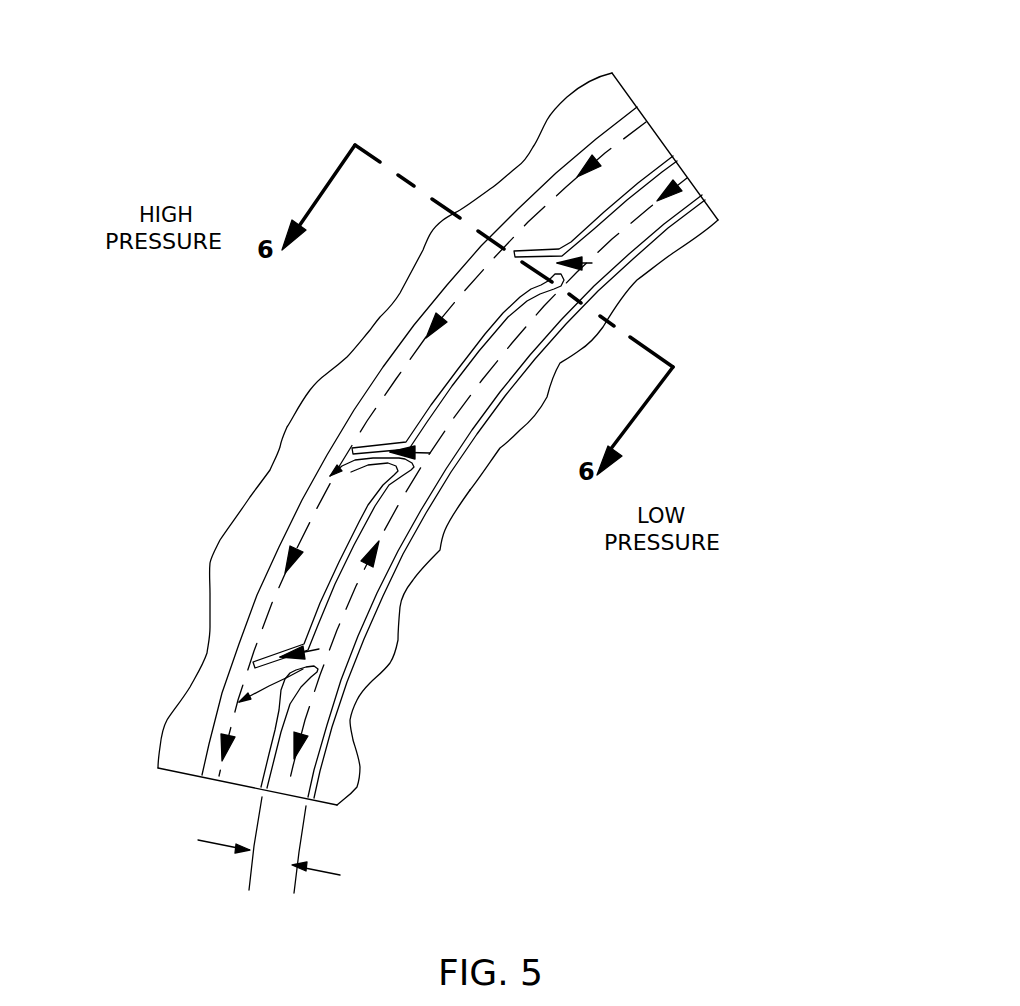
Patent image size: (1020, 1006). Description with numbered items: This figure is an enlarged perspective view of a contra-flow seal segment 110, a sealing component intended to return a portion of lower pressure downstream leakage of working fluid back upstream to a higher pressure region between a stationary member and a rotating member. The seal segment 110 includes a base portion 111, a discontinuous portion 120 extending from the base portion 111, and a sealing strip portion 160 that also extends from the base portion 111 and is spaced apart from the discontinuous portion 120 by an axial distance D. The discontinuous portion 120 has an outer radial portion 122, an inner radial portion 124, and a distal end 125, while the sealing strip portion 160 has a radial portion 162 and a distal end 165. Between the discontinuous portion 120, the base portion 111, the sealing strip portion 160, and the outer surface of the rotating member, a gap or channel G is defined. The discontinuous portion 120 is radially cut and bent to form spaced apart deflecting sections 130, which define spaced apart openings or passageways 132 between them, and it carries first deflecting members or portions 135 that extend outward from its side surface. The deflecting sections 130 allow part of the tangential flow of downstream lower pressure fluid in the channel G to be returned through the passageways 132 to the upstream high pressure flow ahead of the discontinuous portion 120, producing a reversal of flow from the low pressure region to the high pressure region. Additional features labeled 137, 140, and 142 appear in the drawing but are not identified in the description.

The contra-flow seal segment 110 is at (642, 77).
The base portion 111 is at (577, 122).
The discontinuous portion 120 is at (678, 120).
The outer radial portion 122 is at (286, 520).
The inner radial portion 124 is at (296, 609).
The distal end 125 is at (458, 372).
The deflecting sections 130 is at (395, 662).
The passageways 132 is at (580, 283).
The first deflecting members 135 is at (300, 683).
The shingle tip 137 is at (283, 655).
The shingle 140 is at (423, 392).
The shingle trailing tip 142 is at (353, 433).
The sealing strip portion 160 is at (716, 169).
The radial portion 162 is at (680, 207).
The distal end 165 is at (547, 340).
The channel G is at (405, 522).
The axial distance D is at (284, 846).